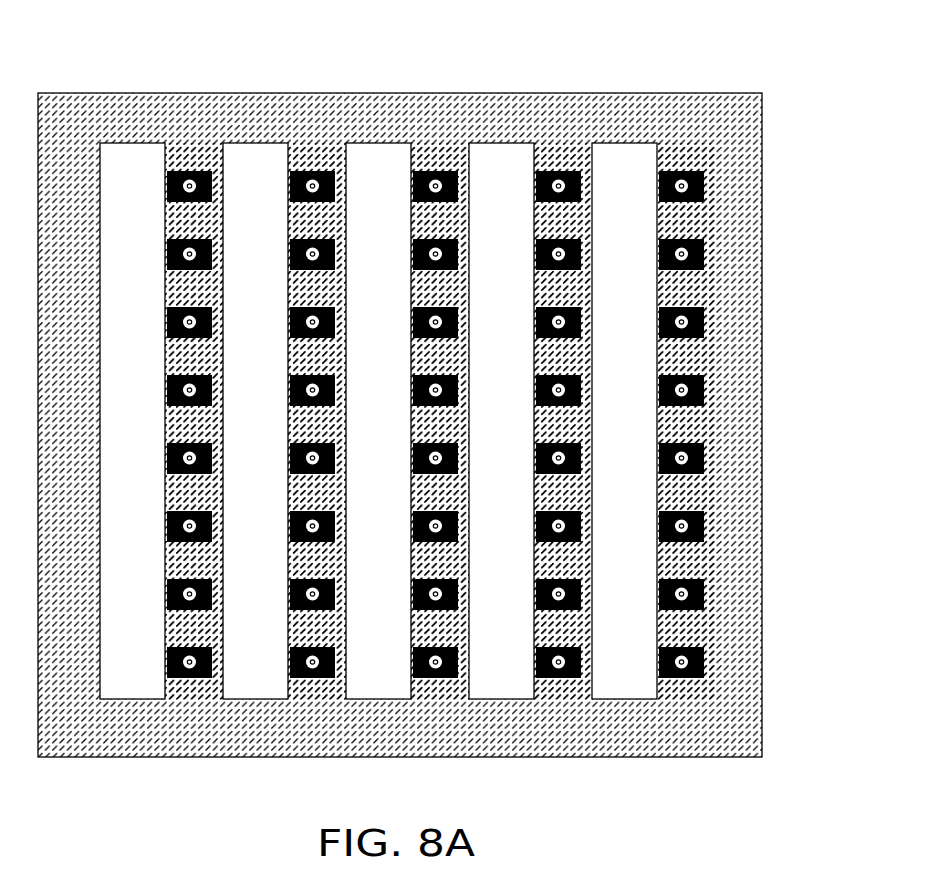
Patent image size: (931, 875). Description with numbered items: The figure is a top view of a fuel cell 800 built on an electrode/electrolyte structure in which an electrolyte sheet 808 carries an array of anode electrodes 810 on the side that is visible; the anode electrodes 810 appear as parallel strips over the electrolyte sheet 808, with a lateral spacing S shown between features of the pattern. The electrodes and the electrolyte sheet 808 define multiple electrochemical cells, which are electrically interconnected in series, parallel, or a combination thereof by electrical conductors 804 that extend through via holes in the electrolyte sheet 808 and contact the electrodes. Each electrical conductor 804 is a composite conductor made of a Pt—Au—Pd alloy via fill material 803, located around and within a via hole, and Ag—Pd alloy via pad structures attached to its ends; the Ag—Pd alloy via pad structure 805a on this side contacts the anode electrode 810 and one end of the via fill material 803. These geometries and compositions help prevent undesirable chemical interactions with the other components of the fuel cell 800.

The fuel cell 800 is at (421, 421).
The electrolyte sheet 808 is at (493, 93).
The anode electrode 810 is at (363, 145).
The electrical conductor 804 is at (430, 681).
The Pt—Au—Pd alloy via fill material 803 is at (553, 678).
The Ag—Pd alloy via pad structure 805a is at (571, 679).
The spacing S is at (191, 170).